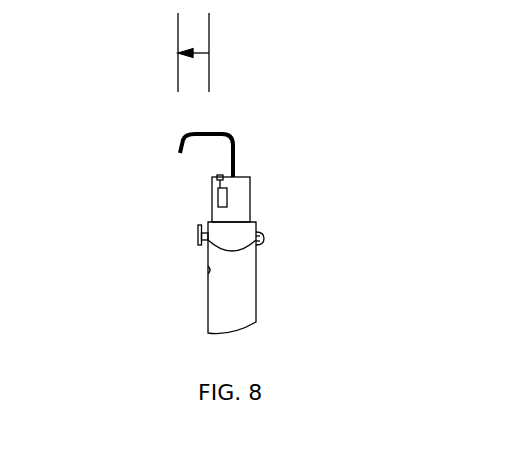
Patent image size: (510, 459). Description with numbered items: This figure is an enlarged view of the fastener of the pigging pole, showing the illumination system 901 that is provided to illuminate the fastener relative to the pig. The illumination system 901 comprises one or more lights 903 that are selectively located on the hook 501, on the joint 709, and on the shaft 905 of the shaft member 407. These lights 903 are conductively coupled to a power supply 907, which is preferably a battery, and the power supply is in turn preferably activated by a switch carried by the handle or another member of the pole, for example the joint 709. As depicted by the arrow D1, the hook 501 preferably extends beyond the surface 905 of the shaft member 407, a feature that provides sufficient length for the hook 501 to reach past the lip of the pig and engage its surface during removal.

The arrow D1 is at (209, 50).
The hook 501 is at (212, 132).
The joint 709 is at (250, 192).
The lights 903 is at (208, 270).
The power supply 907 is at (218, 198).
The shaft member 407 is at (256, 286).
The shaft 905 is at (200, 312).
The illumination system 901 is at (114, 212).